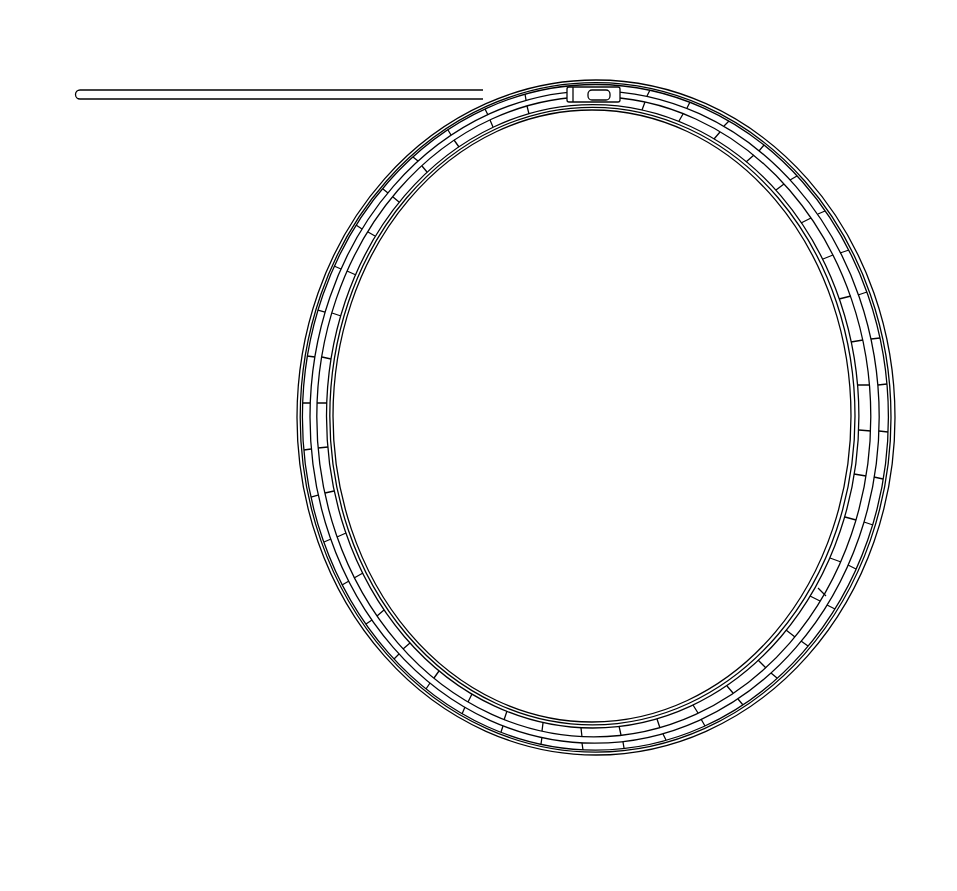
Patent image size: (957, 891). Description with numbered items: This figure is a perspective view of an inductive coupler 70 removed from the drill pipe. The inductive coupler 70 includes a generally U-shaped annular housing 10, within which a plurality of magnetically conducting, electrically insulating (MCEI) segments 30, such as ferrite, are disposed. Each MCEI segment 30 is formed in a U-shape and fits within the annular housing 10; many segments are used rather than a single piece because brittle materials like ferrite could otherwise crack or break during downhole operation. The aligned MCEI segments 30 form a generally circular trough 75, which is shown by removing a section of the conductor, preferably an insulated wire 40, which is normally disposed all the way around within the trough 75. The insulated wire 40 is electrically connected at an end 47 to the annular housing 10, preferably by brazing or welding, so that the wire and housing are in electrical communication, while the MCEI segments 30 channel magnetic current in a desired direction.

The annular housing 10 is at (340, 248).
The MCEI segments 30 is at (780, 672).
The insulated wire 40 is at (278, 93).
The end 47 is at (552, 93).
The inductive coupler 70 is at (178, 378).
The circular trough 75 is at (822, 592).